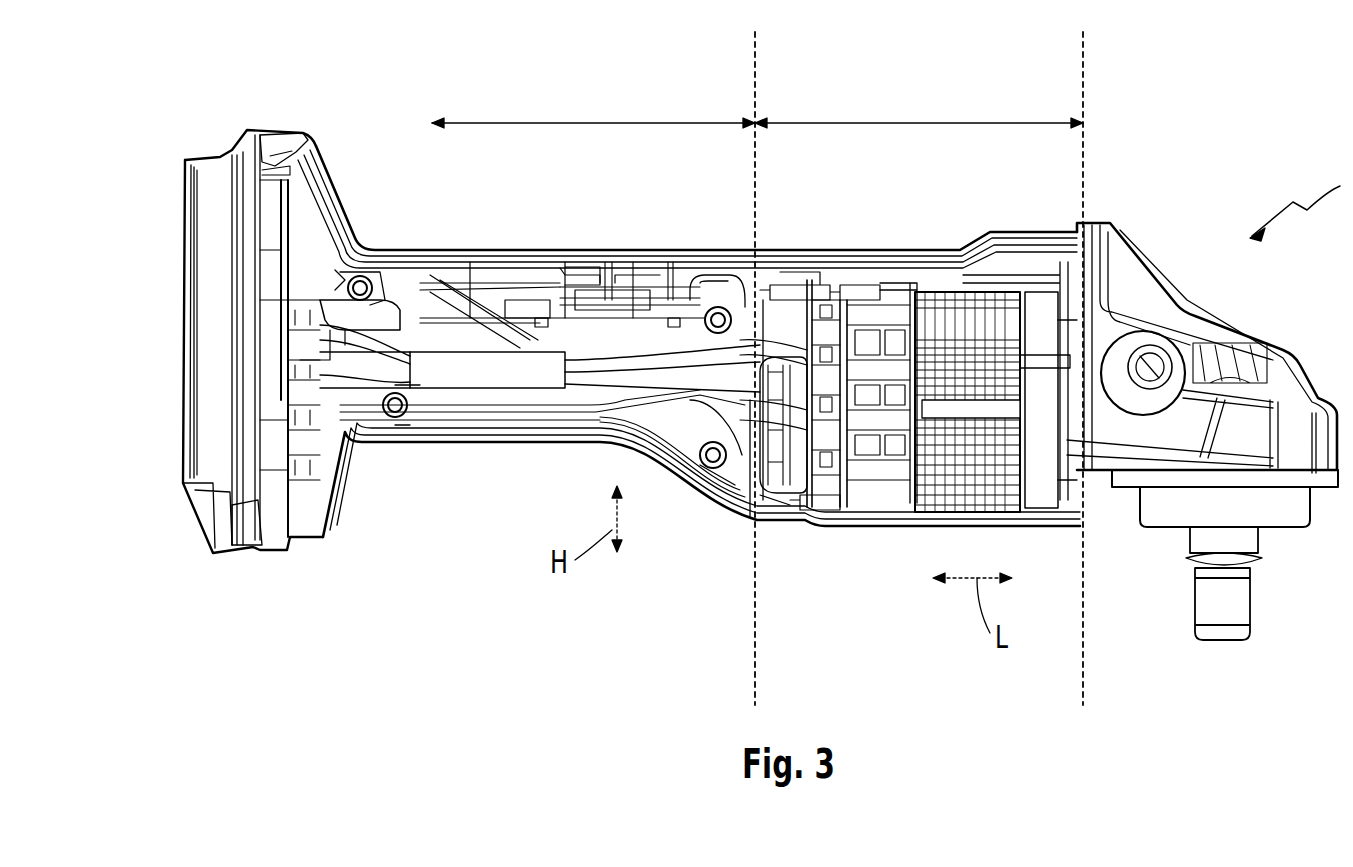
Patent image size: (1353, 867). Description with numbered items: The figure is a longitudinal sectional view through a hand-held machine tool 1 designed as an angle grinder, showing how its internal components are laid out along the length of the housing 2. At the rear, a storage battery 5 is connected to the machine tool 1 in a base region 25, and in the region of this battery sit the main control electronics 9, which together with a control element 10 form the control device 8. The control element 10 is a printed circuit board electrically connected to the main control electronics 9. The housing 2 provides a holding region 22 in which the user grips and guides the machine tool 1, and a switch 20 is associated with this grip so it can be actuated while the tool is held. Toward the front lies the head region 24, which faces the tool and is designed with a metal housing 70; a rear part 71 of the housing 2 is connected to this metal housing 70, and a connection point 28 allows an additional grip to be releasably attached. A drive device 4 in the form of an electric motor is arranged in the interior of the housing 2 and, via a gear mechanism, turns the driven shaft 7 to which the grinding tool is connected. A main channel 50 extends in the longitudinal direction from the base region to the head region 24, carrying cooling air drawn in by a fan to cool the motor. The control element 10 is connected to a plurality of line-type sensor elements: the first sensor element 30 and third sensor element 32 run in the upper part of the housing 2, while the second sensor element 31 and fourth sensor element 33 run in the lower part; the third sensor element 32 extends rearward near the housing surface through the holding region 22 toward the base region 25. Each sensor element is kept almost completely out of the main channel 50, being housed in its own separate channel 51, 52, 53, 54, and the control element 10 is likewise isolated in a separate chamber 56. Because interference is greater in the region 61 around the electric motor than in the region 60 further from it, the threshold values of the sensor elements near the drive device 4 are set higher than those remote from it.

The hand-held machine tool 1 is at (1301, 204).
The housing 2 is at (442, 246).
The drive device 4 is at (935, 480).
The storage battery 5 is at (205, 383).
The driven shaft 7 is at (1242, 613).
The control device 8 is at (284, 135).
The main control electronics 9 is at (279, 490).
The control element 10 is at (632, 250).
The switch 20 is at (975, 250).
The holding region 22 is at (812, 270).
The head region 24 is at (1128, 270).
The base region 25 is at (205, 240).
The connection point 28 is at (1160, 355).
The first sensor element 30 is at (710, 250).
The second sensor element 31 is at (808, 515).
The third sensor element 32 is at (500, 250).
The fourth sensor element 33 is at (530, 442).
The main channel 50 is at (395, 330).
The separate channel 51 is at (860, 280).
The separate channel 52 is at (840, 515).
The separate channel 53 is at (565, 250).
The separate channel 54 is at (478, 440).
The chamber 56 is at (655, 250).
The region further away from the electric motor 60 is at (575, 123).
The region in which the electric motor is arranged 61 is at (882, 123).
The metal housing 70 is at (1115, 330).
The rear part 71 is at (912, 283).